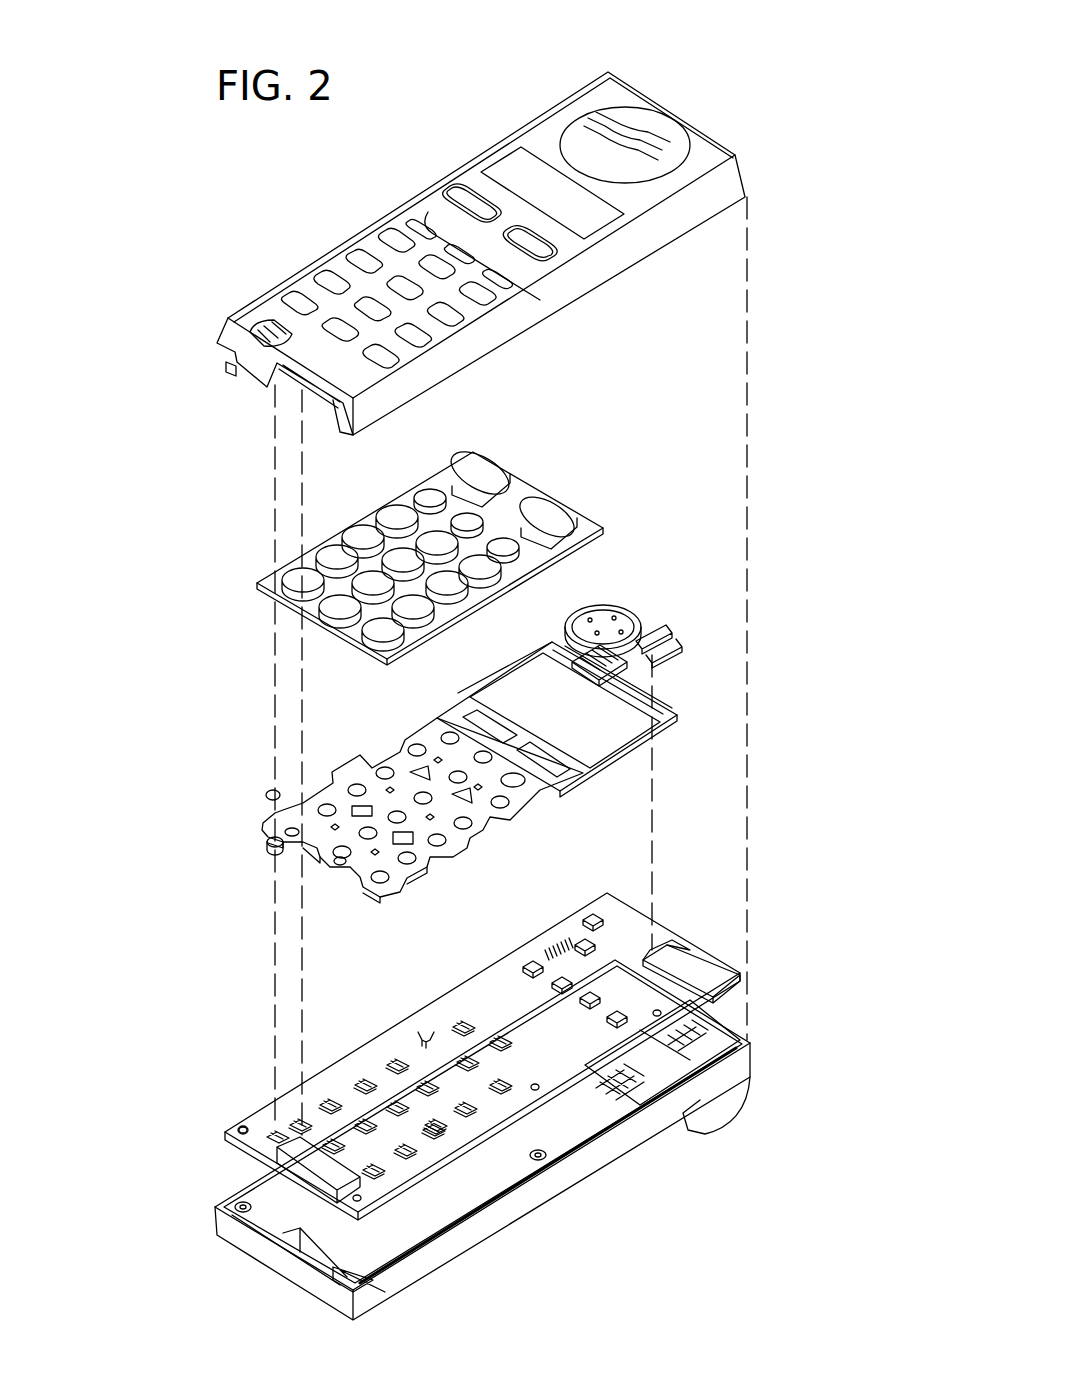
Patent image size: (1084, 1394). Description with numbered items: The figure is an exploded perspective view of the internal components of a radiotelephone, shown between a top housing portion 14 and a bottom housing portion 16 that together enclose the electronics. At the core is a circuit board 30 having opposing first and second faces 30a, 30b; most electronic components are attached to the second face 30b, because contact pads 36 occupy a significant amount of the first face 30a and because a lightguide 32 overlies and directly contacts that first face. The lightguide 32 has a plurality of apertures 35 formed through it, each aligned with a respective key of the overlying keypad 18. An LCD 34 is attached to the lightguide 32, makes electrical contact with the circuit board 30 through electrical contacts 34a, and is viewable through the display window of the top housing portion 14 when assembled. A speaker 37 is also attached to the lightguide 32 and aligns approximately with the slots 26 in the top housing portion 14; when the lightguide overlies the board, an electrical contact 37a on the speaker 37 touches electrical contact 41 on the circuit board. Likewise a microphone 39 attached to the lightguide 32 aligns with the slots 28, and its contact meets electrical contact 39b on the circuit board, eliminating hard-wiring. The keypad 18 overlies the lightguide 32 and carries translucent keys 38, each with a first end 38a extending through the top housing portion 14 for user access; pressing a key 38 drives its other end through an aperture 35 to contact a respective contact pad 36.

The top housing portion 14 is at (620, 78).
The slots 26 is at (612, 118).
The slots 28 is at (256, 314).
The keypad 18 is at (482, 468).
The first end 38a is at (520, 547).
The translucent keys 38 is at (465, 590).
The speaker 37 is at (640, 612).
The electrical contact 37a is at (660, 650).
The LCD 34 is at (568, 707).
The lightguide 32 is at (448, 716).
The apertures 35 is at (357, 790).
The microphone 39 is at (272, 843).
The circuit board 30 is at (626, 903).
The electrical contacts 34a is at (562, 950).
The electrical contact 41 is at (680, 950).
The contact pads 36 is at (510, 1080).
The electrical contact 39b is at (277, 1133).
The first face 30a is at (232, 1130).
The second face 30b is at (233, 1150).
The bottom housing portion 16 is at (752, 1055).